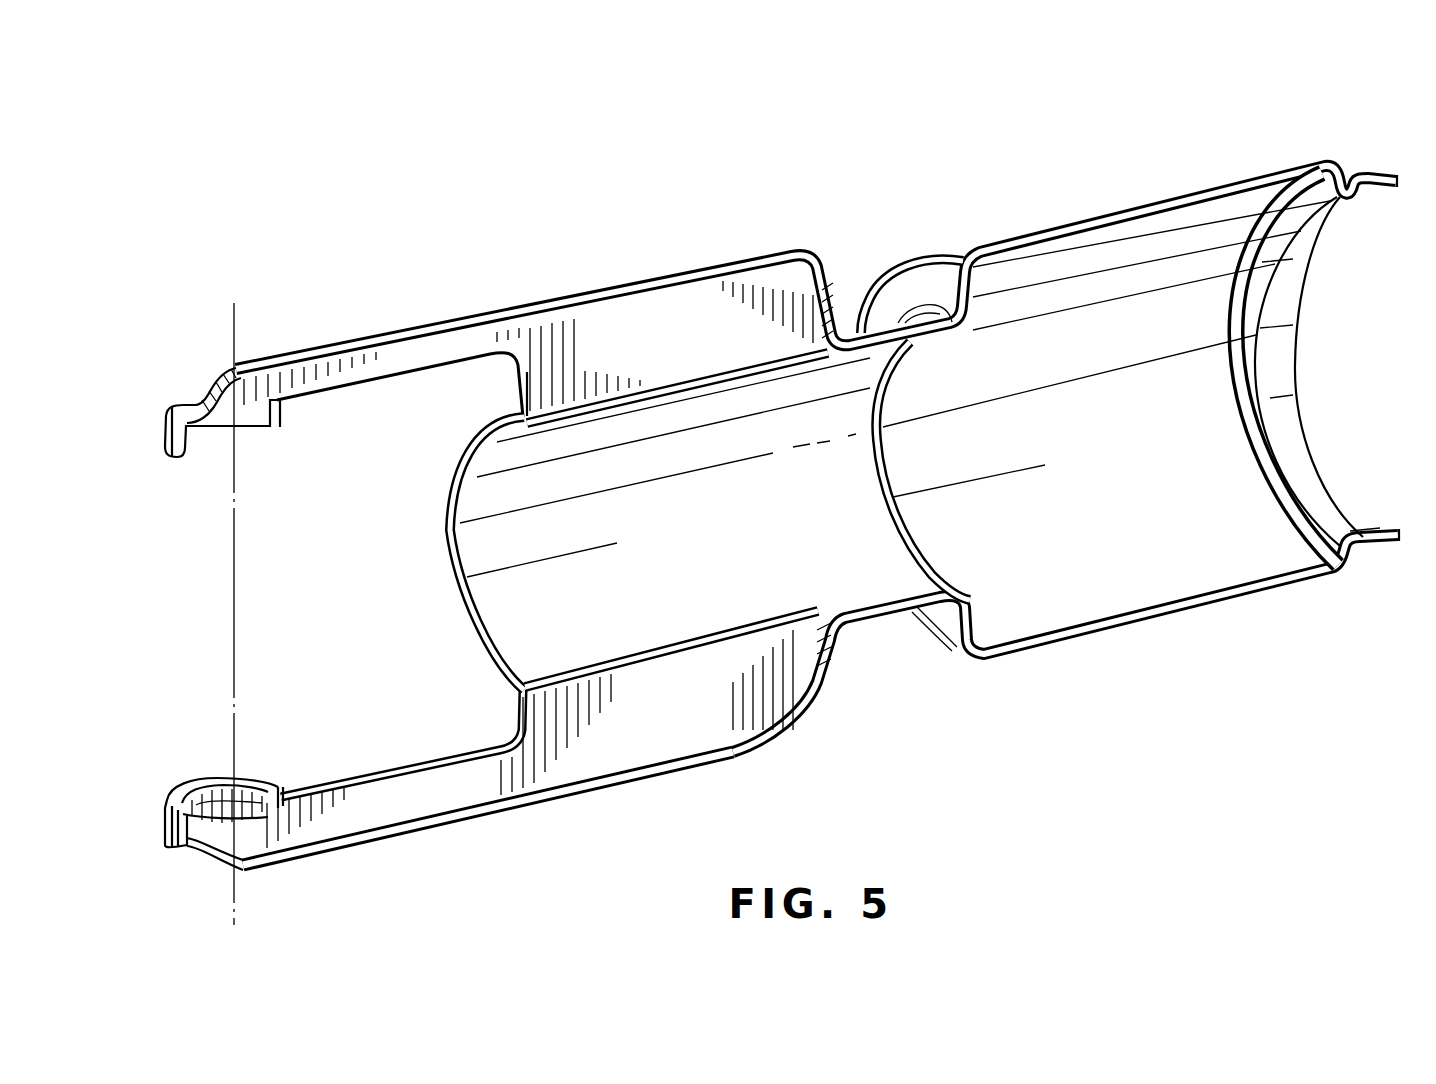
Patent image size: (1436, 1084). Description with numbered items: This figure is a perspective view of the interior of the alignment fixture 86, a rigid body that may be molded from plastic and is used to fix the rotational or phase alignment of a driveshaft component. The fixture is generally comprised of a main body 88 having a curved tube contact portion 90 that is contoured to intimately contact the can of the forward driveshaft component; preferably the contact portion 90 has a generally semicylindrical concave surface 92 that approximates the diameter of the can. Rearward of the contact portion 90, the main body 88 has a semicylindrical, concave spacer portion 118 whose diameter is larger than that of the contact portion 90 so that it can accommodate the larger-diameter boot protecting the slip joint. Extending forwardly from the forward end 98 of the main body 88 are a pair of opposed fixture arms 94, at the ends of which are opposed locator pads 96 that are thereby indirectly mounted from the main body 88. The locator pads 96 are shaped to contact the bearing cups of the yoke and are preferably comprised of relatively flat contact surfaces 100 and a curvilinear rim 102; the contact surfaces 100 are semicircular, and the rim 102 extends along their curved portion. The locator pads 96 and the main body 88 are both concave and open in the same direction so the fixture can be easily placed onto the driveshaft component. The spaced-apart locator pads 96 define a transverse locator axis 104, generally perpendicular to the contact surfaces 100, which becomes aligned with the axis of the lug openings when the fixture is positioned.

The alignment fixture 86 is at (780, 541).
The main body 88 is at (780, 541).
The curved tube contact portion 90 is at (780, 563).
The semicylindrical concave surface 92 is at (881, 625).
The fixture arms 94 is at (398, 378).
The locator pads 96 is at (180, 392).
The forward end 98 is at (453, 576).
The contact surfaces 100 is at (213, 822).
The curvilinear rim 102 is at (189, 442).
The transverse locator axis 104 is at (238, 585).
The spacer portion 118 is at (900, 233).